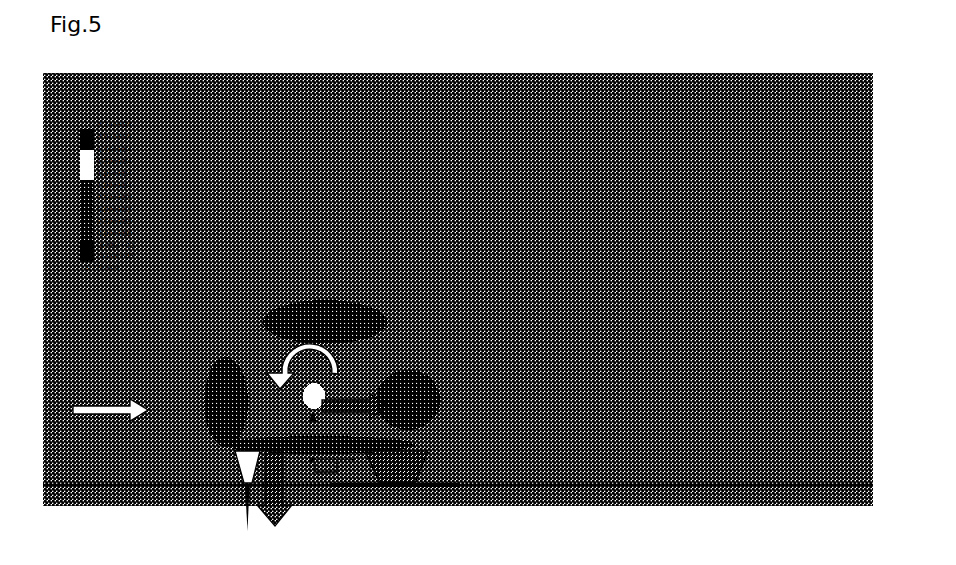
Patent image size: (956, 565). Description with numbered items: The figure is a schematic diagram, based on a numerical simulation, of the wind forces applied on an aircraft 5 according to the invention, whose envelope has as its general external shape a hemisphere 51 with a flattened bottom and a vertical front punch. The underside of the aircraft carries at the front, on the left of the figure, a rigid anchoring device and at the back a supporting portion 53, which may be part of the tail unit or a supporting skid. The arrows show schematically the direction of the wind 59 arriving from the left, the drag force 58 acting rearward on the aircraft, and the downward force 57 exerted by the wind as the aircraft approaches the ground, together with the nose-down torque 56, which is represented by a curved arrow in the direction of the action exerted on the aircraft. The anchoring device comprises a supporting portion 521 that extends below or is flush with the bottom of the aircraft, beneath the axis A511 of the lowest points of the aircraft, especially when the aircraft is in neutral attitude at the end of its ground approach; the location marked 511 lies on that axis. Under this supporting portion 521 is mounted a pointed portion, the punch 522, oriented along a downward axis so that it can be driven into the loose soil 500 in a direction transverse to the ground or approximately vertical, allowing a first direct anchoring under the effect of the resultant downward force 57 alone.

The aircraft 5 is at (300, 257).
The hemisphere 51 is at (246, 364).
The nose-down torque 56 is at (268, 348).
The drag force 58 is at (366, 394).
The wind 59 is at (113, 406).
The supporting portion 521 is at (240, 458).
The punch 522 is at (245, 513).
The downward force 57 is at (287, 510).
The measurement point 511 is at (352, 462).
The supporting portion 53 is at (395, 470).
The axis of the lowest points of the aircraft A511 is at (440, 484).
The loose soil 500 is at (508, 488).